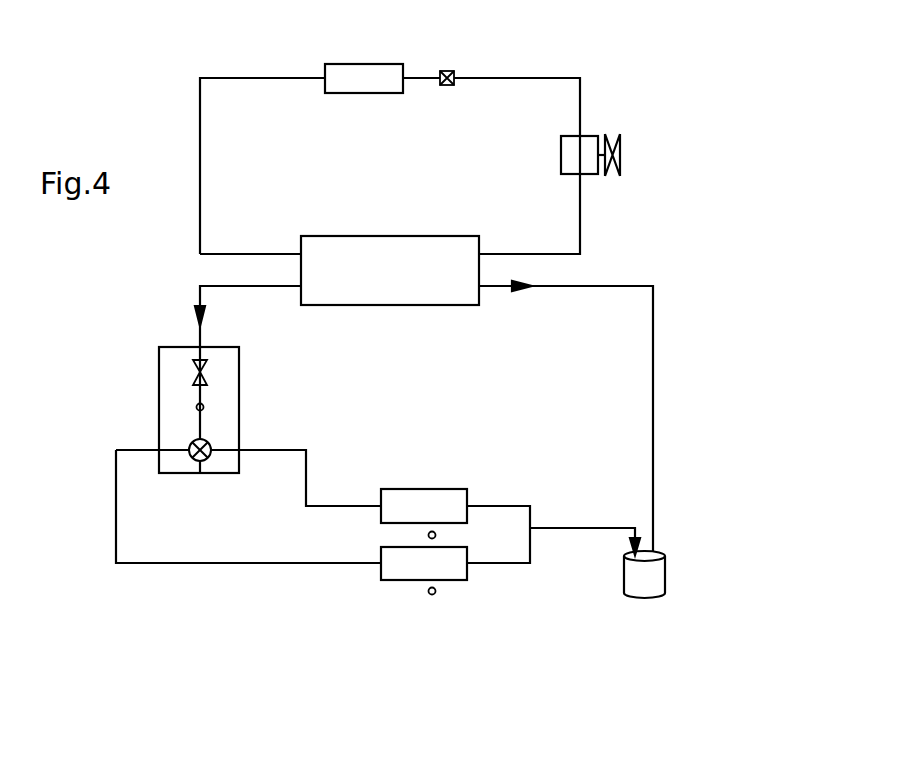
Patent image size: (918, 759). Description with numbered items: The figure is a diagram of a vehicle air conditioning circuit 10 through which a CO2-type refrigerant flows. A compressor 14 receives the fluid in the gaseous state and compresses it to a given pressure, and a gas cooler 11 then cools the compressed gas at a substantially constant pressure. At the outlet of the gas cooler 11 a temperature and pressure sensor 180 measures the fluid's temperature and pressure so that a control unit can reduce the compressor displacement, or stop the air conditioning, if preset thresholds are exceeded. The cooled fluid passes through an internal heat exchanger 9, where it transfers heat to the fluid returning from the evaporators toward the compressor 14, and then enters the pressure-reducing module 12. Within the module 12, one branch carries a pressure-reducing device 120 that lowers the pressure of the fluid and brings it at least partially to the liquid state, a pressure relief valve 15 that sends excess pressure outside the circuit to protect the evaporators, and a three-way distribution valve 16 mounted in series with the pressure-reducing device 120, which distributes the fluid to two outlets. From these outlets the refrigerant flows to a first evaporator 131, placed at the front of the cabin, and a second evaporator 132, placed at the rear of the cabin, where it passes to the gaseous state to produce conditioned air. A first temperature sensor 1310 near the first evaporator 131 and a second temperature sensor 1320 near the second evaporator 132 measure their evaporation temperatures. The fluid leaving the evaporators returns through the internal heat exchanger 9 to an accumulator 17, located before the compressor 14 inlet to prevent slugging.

The air conditioning circuit 10 is at (643, 112).
The gas cooler 11 is at (335, 93).
The temperature and pressure sensor 180 is at (447, 70).
The compressor 14 is at (561, 156).
The internal heat exchanger 9 is at (354, 235).
The pressure-reducing module 12 is at (159, 366).
The pressure-reducing device 120 is at (208, 366).
The pressure relief valve 15 is at (206, 406).
The distribution valve 16 is at (200, 468).
The second evaporator 132 is at (449, 490).
The first evaporator 131 is at (392, 581).
The second temperature sensor 1320 is at (428, 535).
The first temperature sensor 1310 is at (431, 595).
The accumulator 17 is at (645, 599).